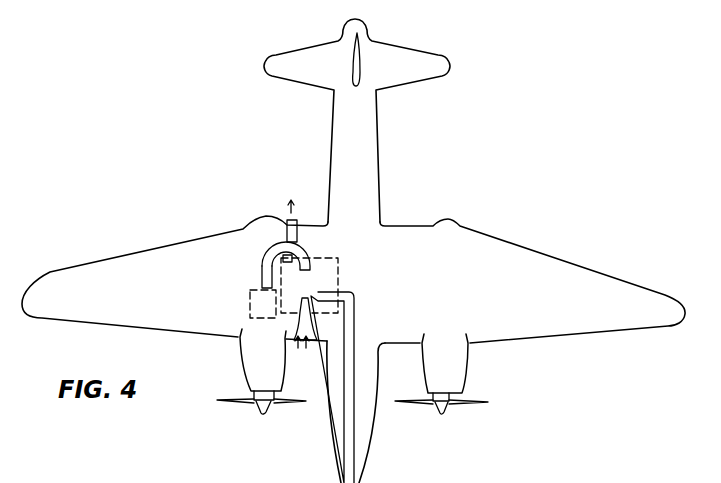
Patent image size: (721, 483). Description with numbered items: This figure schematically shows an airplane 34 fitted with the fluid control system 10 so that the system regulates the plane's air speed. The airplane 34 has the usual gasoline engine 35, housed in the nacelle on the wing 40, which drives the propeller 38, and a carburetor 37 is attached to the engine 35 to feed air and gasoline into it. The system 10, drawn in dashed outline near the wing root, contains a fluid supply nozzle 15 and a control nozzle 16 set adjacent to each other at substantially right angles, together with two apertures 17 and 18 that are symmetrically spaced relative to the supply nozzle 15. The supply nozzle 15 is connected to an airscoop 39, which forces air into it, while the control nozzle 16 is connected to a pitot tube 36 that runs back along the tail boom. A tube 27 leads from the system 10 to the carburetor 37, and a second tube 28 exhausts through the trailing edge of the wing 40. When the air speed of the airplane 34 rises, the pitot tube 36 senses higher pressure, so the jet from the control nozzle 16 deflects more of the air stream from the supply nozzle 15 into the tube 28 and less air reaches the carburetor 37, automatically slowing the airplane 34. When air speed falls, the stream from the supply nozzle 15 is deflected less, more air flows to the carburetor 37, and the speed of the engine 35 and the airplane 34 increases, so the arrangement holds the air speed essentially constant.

The system 10 is at (335, 278).
The fluid supply nozzle 15 is at (301, 306).
The control nozzle 16 is at (346, 296).
The aperture 17 is at (307, 251).
The aperture 18 is at (289, 258).
The tube 27 is at (263, 274).
The tube 28 is at (296, 221).
The airplane 34 is at (333, 144).
The gasoline engine 35 is at (247, 358).
The pitot tube 36 is at (345, 437).
The carburetor 37 is at (253, 300).
The propeller 38 is at (238, 400).
The airscoop 39 is at (300, 352).
The wing 40 is at (161, 253).